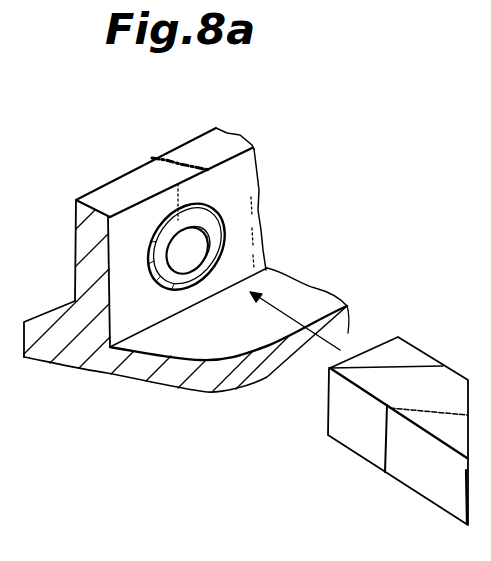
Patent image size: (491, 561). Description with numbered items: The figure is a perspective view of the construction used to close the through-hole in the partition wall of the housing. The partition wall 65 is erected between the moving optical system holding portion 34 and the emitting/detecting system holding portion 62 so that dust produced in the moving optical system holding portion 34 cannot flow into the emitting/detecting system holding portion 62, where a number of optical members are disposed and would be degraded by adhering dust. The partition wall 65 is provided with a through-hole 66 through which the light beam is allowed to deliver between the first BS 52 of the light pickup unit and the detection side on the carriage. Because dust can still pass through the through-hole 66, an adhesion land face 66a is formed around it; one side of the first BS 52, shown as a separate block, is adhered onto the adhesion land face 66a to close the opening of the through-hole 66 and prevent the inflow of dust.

The partition wall 65 is at (138, 187).
The through-hole 66 is at (184, 248).
The adhesion land face 66a is at (220, 218).
The moving optical system holding portion 34 is at (66, 318).
The emitting/detecting system holding portion 62 is at (205, 342).
The first BS 52 is at (388, 389).